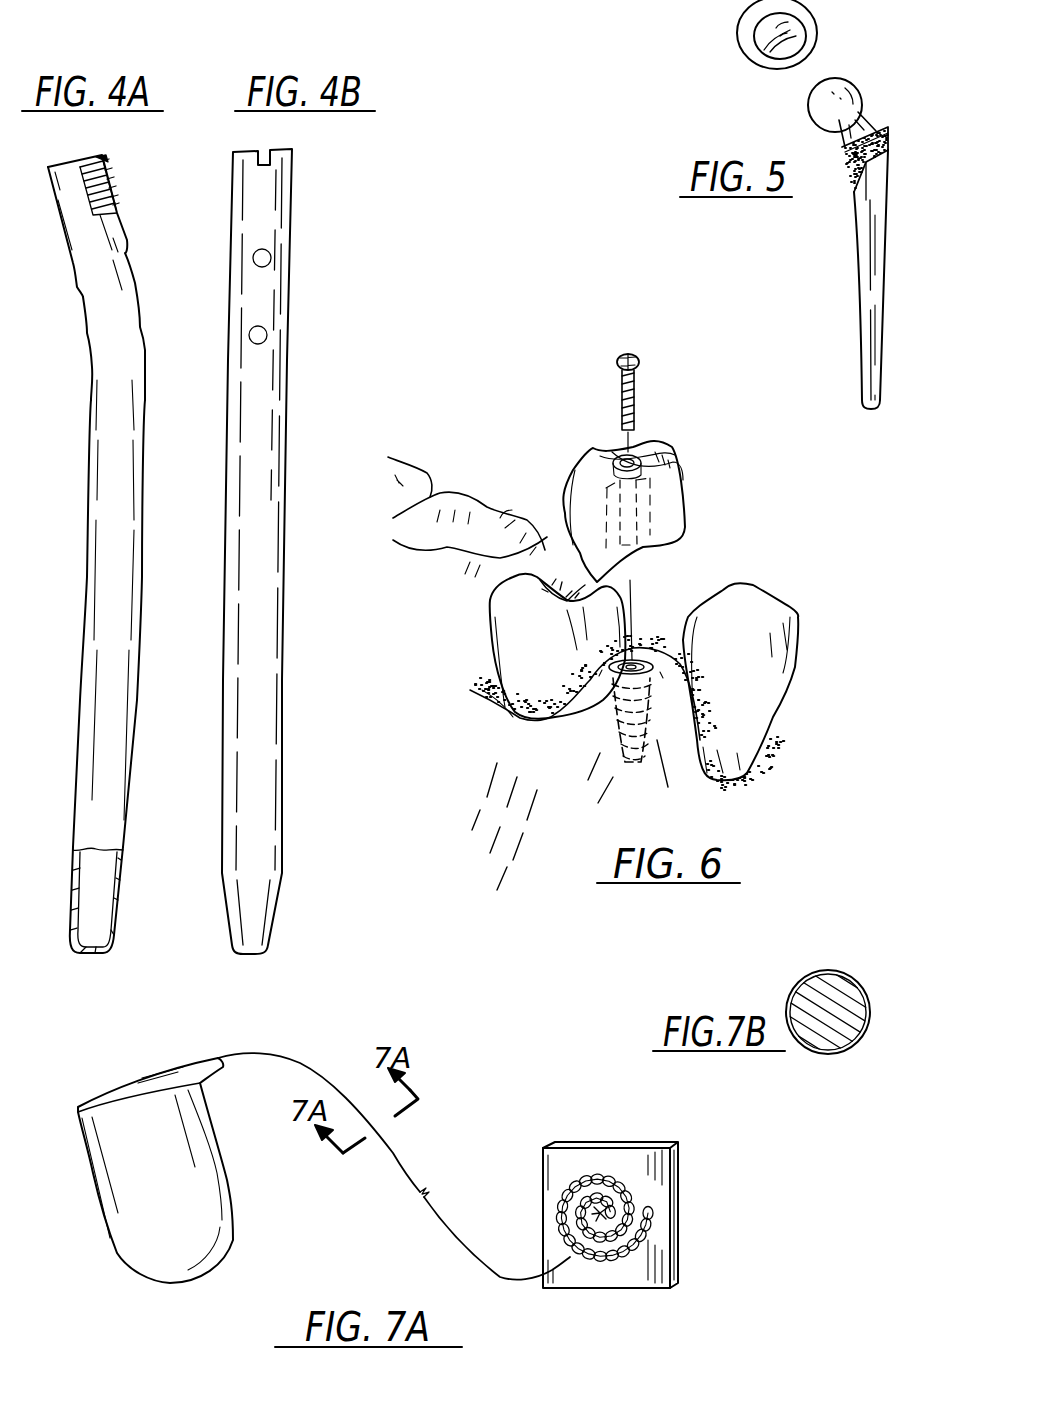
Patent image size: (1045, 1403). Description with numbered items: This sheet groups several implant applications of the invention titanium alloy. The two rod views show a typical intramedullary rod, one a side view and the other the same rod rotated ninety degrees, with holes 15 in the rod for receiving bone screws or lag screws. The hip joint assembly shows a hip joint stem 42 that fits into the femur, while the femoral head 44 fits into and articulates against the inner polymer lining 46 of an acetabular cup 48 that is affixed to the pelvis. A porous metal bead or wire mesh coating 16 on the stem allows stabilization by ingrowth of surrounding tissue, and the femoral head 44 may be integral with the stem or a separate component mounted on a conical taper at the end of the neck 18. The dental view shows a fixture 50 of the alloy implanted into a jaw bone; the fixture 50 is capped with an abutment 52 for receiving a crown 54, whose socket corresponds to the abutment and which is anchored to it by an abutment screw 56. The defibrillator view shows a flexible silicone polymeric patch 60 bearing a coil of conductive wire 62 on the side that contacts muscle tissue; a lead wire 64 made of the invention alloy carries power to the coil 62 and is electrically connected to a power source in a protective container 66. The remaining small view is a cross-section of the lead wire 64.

In FIG. 4B, the holes 15 is at (267, 337).
In FIG. 5, the porous metal bead or wire mesh coating 16 is at (846, 170).
In FIG. 5, the neck 18 is at (840, 138).
In FIG. 5, the hip joint stem 42 is at (862, 296).
In FIG. 5, the femoral head 44 is at (808, 109).
In FIG. 5, the inner polymer lining 46 is at (776, 52).
In FIG. 5, the acetabular cup 48 is at (740, 22).
In FIG. 6, the fixture 50 is at (617, 716).
In FIG. 6, the abutment 52 is at (683, 547).
In FIG. 6, the crown 54 is at (686, 482).
In FIG. 6, the abutment screw 56 is at (636, 400).
In FIG. 7A, the silicone polymeric patch 60 is at (680, 1192).
In FIG. 7A, the coil of conductive wire 62 is at (579, 1163).
In FIG. 7A, the lead wire 64 is at (404, 1163).
In FIG. 7A, the protective container 66 is at (235, 1205).